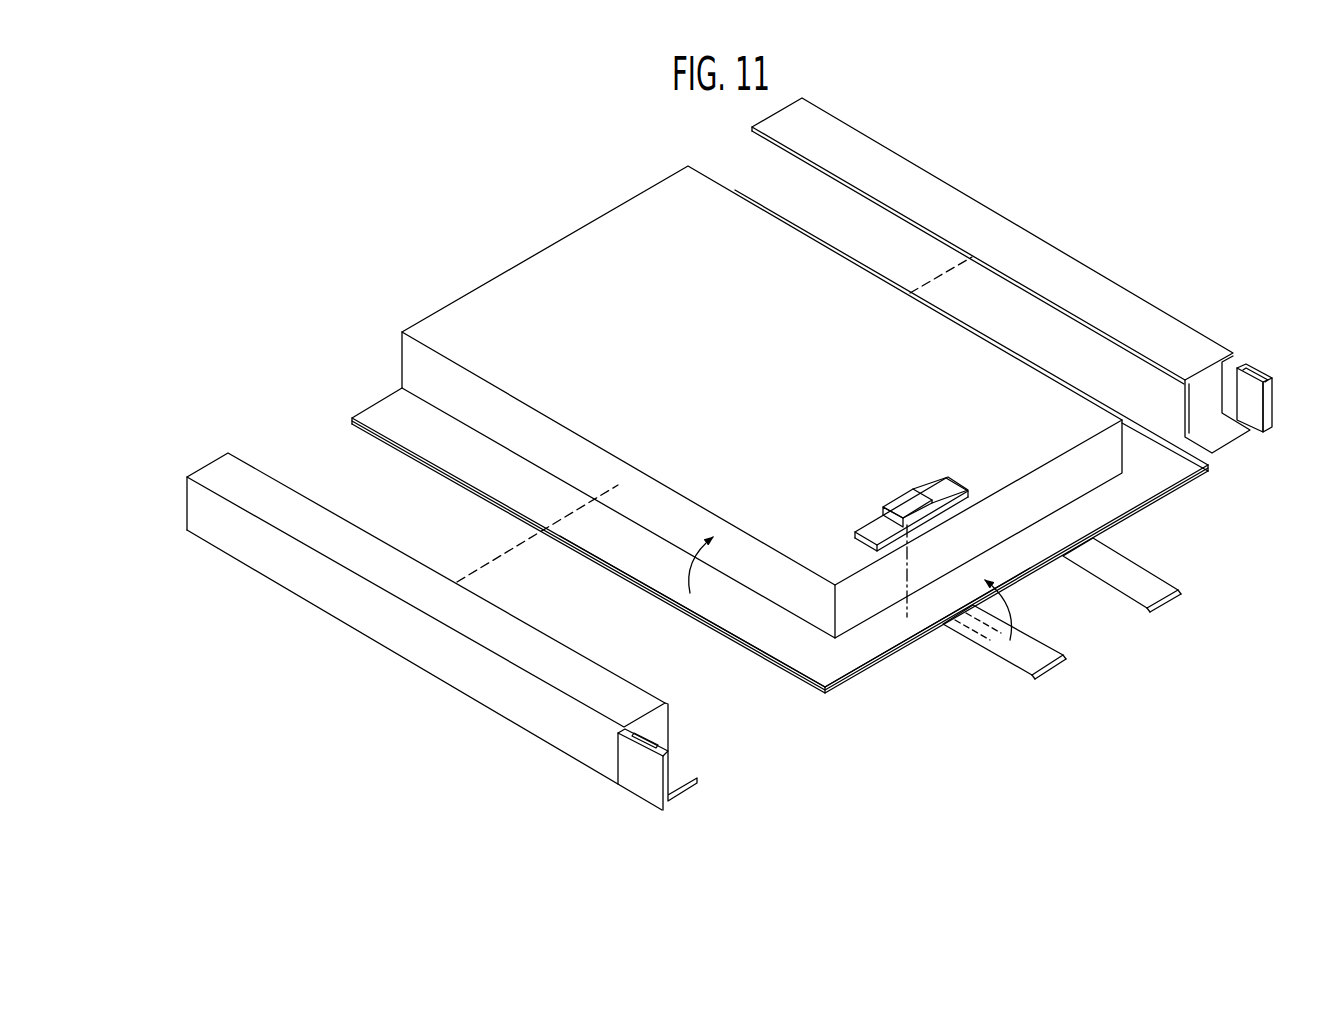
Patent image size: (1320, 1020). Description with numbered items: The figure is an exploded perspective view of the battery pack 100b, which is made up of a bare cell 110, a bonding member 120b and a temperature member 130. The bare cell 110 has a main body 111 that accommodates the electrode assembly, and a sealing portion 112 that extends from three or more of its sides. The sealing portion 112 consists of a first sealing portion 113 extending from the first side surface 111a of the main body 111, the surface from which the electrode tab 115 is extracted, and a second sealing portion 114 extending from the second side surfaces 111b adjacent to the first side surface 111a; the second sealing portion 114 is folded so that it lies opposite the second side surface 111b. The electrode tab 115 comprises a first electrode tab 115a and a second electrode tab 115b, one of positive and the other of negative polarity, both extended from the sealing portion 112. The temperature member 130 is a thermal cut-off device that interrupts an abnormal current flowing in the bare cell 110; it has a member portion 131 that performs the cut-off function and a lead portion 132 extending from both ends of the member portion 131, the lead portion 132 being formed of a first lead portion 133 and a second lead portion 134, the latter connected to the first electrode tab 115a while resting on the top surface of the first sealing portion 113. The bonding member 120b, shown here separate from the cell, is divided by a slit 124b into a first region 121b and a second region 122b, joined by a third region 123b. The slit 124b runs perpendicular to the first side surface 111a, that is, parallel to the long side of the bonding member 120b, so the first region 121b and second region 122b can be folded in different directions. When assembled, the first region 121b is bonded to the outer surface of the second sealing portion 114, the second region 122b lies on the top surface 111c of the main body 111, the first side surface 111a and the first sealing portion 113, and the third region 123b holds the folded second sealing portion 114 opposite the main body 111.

The battery pack 100b is at (420, 131).
The bare cell 110 is at (785, 787).
The main body 111 is at (800, 632).
The first side surface 111a is at (985, 532).
The second side surface 111b is at (412, 368).
The top surface 111c is at (562, 252).
The sealing portion 112 is at (828, 705).
The first sealing portion 113 is at (905, 656).
The second sealing portion 114 is at (737, 652).
The electrode tab 115 is at (1178, 709).
The first electrode tab 115a is at (1040, 657).
The second electrode tab 115b is at (1140, 595).
The bonding member 120b is at (478, 797).
The first region 121b is at (570, 737).
The second region 122b is at (627, 702).
The third region 123b is at (617, 730).
The slit 124b is at (640, 731).
The temperature member 130 is at (903, 484).
The member portion 131 is at (888, 524).
The lead portion 132 is at (1008, 446).
The first lead portion 133 is at (957, 483).
The second lead portion 134 is at (923, 487).